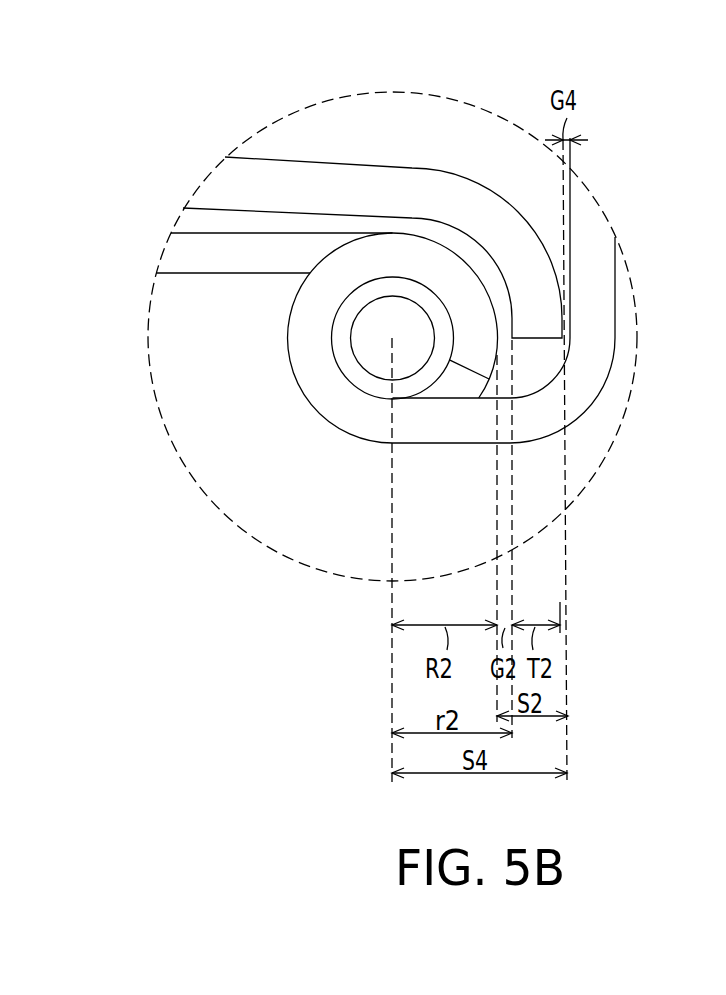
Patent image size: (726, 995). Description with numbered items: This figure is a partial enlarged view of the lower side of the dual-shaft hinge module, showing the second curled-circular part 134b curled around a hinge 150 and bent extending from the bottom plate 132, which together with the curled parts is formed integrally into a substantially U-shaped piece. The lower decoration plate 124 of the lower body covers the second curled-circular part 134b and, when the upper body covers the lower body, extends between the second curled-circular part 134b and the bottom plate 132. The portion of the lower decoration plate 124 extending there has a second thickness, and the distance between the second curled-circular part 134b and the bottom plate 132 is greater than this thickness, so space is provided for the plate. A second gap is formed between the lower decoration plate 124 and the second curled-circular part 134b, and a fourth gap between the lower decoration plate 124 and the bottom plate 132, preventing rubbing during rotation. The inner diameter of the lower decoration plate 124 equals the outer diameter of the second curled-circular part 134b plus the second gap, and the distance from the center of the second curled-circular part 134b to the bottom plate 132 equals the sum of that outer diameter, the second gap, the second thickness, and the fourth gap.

The lower decoration plate 124 is at (475, 213).
The bottom plate 132 is at (597, 230).
The second curled-circular part 134b is at (406, 253).
The hinge 150 is at (375, 354).